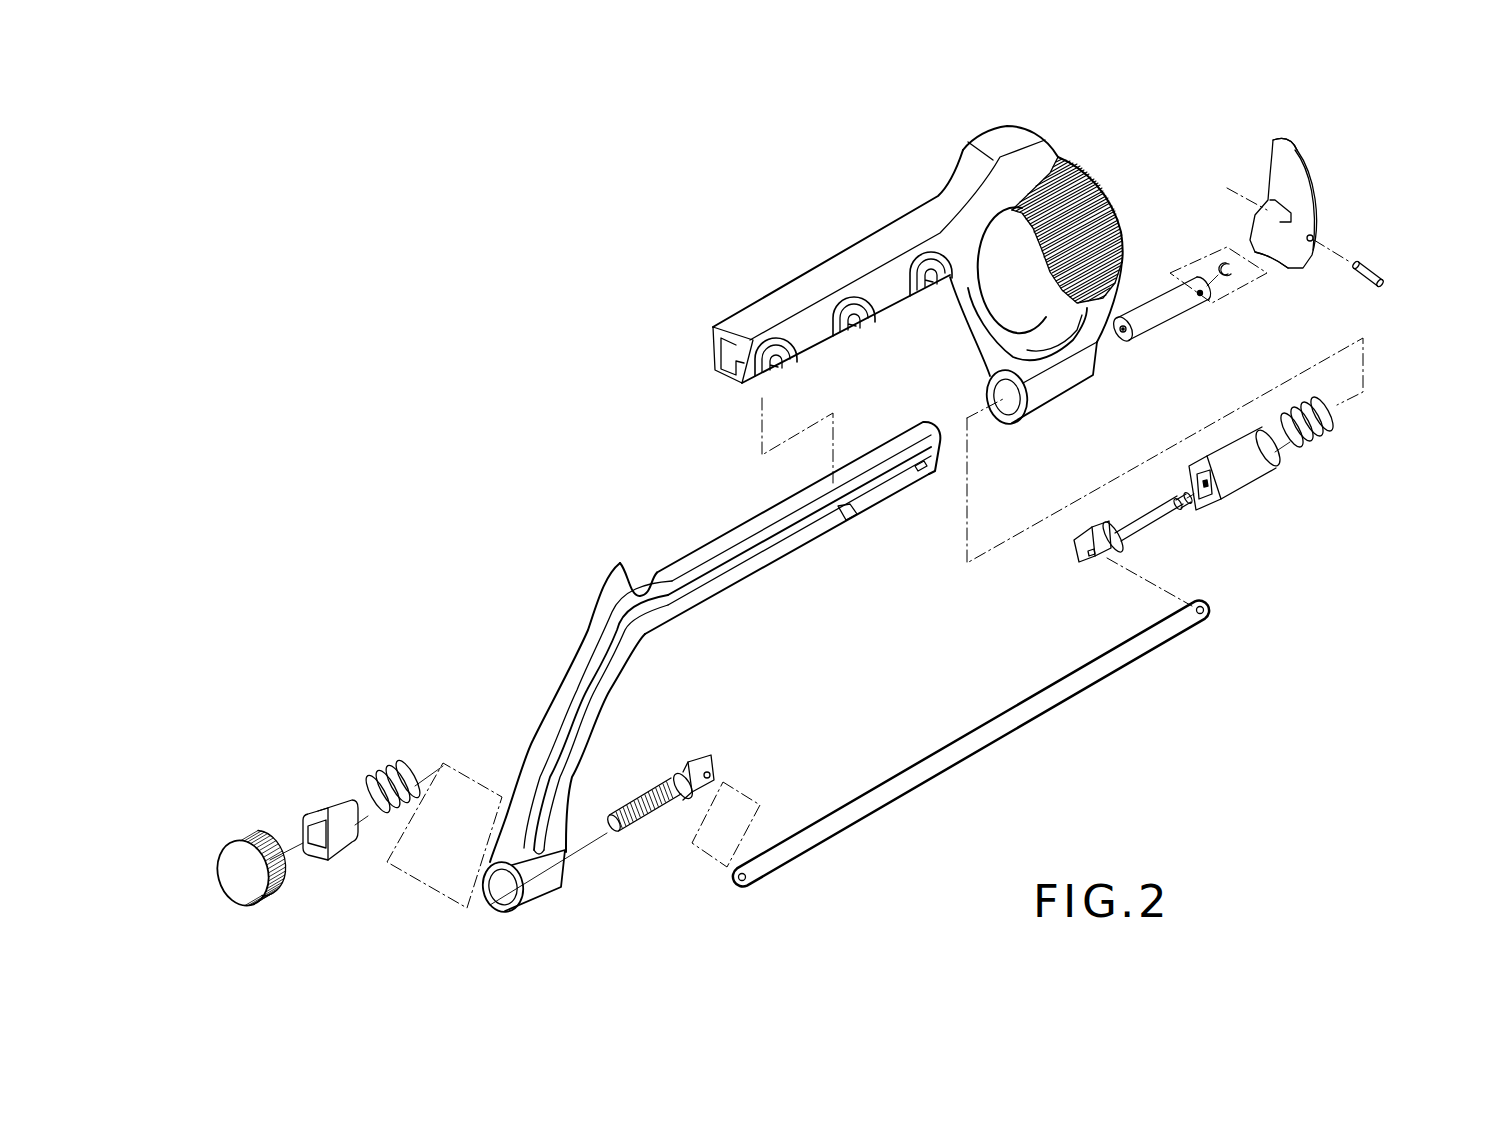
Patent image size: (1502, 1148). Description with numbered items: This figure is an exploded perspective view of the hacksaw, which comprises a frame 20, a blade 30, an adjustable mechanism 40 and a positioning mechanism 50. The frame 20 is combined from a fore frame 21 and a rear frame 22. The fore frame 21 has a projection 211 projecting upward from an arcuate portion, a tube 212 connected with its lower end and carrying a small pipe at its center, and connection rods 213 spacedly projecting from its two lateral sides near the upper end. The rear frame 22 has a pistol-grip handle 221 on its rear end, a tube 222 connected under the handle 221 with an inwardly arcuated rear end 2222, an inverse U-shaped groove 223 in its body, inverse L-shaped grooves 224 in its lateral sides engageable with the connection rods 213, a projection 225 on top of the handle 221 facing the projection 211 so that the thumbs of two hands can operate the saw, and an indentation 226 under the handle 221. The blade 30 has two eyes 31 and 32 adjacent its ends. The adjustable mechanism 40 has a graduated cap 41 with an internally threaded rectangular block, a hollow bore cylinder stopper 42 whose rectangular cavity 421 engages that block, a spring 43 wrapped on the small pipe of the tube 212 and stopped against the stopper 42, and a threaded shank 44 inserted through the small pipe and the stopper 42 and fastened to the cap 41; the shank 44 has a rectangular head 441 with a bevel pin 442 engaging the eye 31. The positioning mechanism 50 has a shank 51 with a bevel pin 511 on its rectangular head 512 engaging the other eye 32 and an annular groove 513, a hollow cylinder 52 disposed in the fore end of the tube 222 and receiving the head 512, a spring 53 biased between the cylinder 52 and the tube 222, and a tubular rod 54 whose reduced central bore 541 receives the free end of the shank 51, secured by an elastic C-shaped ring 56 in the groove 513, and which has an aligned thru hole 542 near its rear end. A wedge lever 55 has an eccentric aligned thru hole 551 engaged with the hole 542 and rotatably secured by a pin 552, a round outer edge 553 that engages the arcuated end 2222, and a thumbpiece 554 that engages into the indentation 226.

The frame 20 is at (681, 293).
The fore frame 21 is at (707, 547).
The projection 211 is at (617, 577).
The tube 212 is at (547, 897).
The connection rods 213 is at (843, 527).
The rear frame 22 is at (763, 310).
The pistol-grip handle 221 is at (1083, 180).
The tube 222 is at (1053, 388).
The inwardly arcuated rear end 2222 is at (1102, 352).
The inverse U-shaped groove 223 is at (727, 358).
The clips 224 is at (780, 367).
The projection 225 is at (990, 143).
The indentation 226 is at (1118, 300).
The blade 30 is at (1113, 662).
The eye 31 is at (749, 878).
The eye 32 is at (1212, 613).
The adjustable mechanism 40 is at (421, 752).
The graduated cap 41 is at (236, 863).
The hollow bore cylinder stopper 42 is at (337, 815).
The rectangular cavity 421 is at (308, 827).
The spring 43 is at (390, 777).
The threaded shank 44 is at (657, 807).
The rectangular head 441 is at (697, 762).
The bevel pin 442 is at (705, 775).
The positioning mechanism 50 is at (1295, 491).
The shank 51 is at (1147, 518).
The bevel pin 511 is at (1075, 553).
The rectangular head 512 is at (1127, 543).
The annular groove 513 is at (1183, 505).
The hollow cylinder 52 is at (1257, 460).
The spring 53 is at (1320, 437).
The tubular rod 54 is at (1160, 307).
The reduced central bore 541 is at (1133, 337).
The aligned thru hole 542 is at (1207, 293).
The wedge lever 55 is at (1313, 200).
The eccentric aligned thru hole 551 is at (1313, 237).
The pin 552 is at (1300, 263).
The pin 553 is at (1383, 277).
The thumbpiece 554 is at (1295, 153).
The elastic C-shaped ring 56 is at (1220, 263).